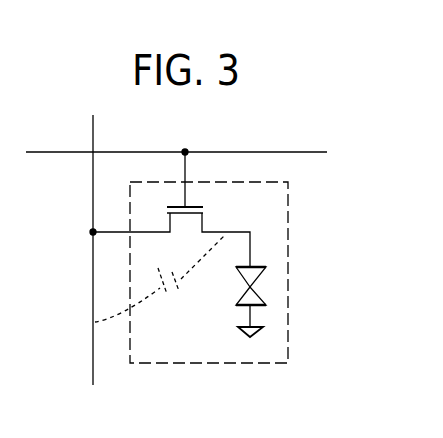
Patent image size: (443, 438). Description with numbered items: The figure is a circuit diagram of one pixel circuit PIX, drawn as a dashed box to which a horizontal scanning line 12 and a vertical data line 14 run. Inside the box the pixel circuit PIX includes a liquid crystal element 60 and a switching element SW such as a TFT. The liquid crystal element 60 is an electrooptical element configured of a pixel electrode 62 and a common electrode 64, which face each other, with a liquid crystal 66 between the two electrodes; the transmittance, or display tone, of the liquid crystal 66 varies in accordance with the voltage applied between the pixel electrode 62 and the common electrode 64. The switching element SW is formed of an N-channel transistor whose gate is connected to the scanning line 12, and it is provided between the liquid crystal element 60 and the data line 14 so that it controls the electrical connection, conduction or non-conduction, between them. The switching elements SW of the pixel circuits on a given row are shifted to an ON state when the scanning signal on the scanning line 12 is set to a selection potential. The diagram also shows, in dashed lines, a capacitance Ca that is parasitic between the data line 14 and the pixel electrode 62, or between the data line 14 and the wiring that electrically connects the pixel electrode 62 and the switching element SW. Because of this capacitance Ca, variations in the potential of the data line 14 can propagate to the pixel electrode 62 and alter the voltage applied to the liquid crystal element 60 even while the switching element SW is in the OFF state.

The scanning line 12 is at (45, 152).
The data line 14 is at (93, 297).
The pixel circuit PIX is at (290, 199).
The switching element SW is at (202, 217).
The capacitance Ca is at (168, 293).
The liquid crystal element 60 is at (322, 287).
The pixel electrode 62 is at (267, 266).
The liquid crystal 66 is at (258, 283).
The common electrode 64 is at (298, 318).